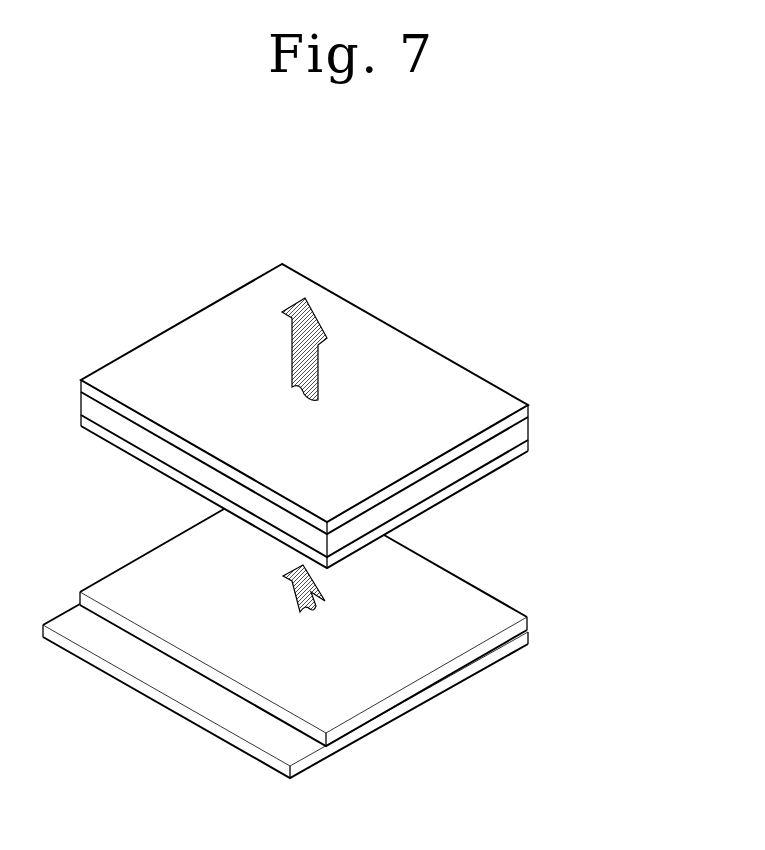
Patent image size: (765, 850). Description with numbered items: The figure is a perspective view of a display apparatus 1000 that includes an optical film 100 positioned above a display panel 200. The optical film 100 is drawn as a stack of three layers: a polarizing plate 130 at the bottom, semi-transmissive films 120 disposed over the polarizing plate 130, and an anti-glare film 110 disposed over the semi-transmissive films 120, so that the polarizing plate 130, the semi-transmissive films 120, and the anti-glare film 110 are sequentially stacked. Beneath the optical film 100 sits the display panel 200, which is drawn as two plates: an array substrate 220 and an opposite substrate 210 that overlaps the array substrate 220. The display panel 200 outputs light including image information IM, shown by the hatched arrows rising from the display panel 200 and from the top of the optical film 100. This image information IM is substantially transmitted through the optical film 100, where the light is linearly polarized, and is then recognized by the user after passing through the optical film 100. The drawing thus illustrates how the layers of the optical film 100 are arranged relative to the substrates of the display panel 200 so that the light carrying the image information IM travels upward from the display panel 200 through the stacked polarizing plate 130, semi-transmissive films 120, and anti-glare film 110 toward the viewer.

The display apparatus 1000 is at (613, 157).
The optical film 100 is at (379, 416).
The anti-glare film 110 is at (531, 408).
The semi-transmissive films 120 is at (531, 430).
The polarizing plate 130 is at (531, 448).
The display panel 200 is at (358, 643).
The opposite substrate 210 is at (531, 622).
The array substrate 220 is at (531, 636).
The image information IM is at (312, 367).